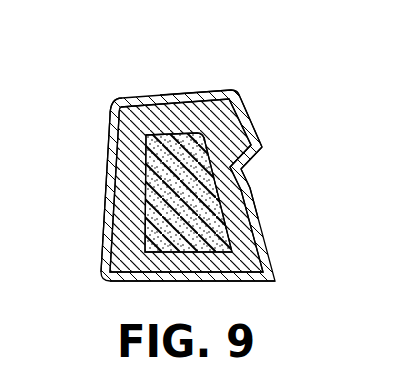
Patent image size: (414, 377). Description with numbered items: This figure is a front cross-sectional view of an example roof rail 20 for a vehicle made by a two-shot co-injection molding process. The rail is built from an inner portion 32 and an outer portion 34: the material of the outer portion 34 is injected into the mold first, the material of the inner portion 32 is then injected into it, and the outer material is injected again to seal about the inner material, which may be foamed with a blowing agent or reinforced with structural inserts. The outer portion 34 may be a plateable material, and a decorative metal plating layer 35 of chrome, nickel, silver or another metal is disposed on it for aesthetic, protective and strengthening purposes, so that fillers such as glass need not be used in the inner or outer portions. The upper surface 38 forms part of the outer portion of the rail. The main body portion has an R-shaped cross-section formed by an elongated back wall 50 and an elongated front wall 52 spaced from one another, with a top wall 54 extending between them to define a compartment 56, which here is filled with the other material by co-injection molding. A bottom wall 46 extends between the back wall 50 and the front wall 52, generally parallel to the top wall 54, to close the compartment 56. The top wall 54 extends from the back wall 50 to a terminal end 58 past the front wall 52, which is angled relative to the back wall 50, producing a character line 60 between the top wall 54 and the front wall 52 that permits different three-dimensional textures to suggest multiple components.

The roof rail 20 is at (302, 131).
The inner portion 32 is at (260, 227).
The outer portion 34 is at (260, 158).
The decorative metal plating layer 35 is at (232, 100).
The upper surface 38 is at (147, 108).
The bottom wall 46 is at (222, 281).
The back wall 50 is at (116, 204).
The front wall 52 is at (257, 203).
The top wall 54 is at (205, 96).
The compartment 56 is at (270, 250).
The terminal end 58 is at (254, 119).
The character line 60 is at (243, 172).